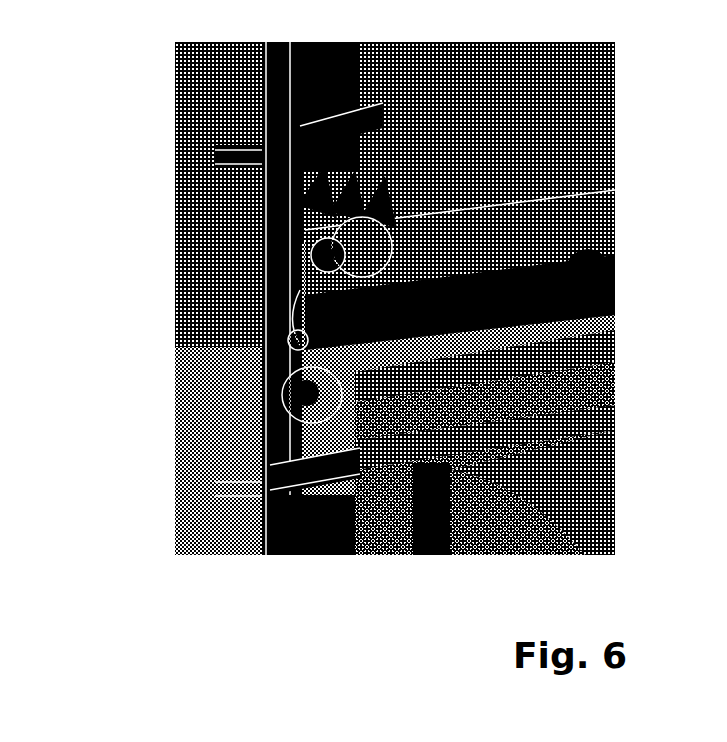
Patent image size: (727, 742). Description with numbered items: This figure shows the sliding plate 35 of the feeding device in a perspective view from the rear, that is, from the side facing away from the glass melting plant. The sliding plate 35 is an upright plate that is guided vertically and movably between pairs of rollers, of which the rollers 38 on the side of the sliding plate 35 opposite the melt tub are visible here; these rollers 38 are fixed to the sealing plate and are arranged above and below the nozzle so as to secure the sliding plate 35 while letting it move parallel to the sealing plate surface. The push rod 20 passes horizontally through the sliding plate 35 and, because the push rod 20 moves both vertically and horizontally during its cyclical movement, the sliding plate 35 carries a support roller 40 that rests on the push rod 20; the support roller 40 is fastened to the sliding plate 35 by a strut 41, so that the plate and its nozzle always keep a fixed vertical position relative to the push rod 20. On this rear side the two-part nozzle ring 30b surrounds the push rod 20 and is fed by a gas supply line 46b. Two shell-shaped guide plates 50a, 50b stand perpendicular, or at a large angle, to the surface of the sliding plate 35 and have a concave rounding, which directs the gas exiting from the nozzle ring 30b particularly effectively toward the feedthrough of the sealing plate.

The push rod 20 is at (490, 272).
The sliding plate 35 is at (270, 93).
The rollers 38 is at (355, 118).
The support roller 40 is at (360, 226).
The strut 41 is at (372, 210).
The nozzle ring 30b is at (300, 245).
The guide plate 50a is at (240, 249).
The guide plate 50b is at (256, 384).
The gas supply line 46b is at (320, 418).